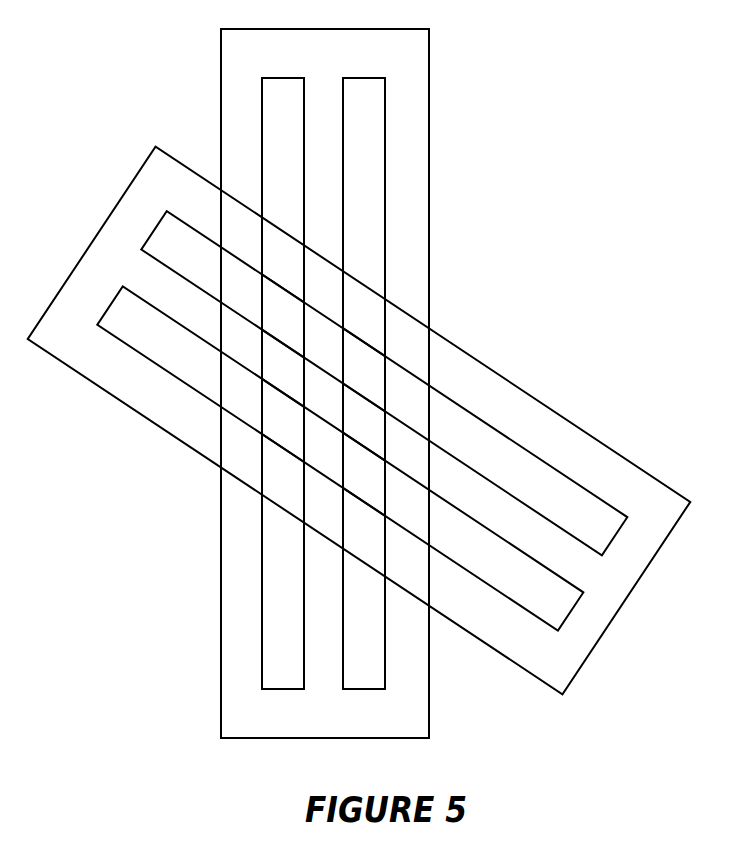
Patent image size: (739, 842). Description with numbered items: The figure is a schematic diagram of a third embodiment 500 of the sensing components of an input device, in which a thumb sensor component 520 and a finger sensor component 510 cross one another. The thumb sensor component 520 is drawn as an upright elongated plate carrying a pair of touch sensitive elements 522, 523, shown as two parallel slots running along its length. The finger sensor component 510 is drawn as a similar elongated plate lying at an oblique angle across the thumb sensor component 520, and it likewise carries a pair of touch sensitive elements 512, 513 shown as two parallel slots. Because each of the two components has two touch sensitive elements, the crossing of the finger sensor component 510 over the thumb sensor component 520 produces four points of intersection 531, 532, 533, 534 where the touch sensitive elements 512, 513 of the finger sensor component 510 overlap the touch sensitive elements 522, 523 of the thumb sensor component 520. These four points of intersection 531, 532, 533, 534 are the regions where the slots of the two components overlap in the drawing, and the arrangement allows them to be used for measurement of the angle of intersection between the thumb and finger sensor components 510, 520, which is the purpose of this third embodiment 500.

The third embodiment 500 is at (633, 177).
The finger sensor component 510 is at (565, 417).
The touch sensitive element 512 is at (578, 497).
The touch sensitive element 513 is at (545, 587).
The thumb sensor component 520 is at (429, 48).
The touch sensitive element 522 is at (291, 129).
The touch sensitive element 523 is at (368, 185).
The point of intersection 531 is at (288, 320).
The point of intersection 532 is at (363, 366).
The point of intersection 533 is at (275, 408).
The point of intersection 534 is at (350, 458).